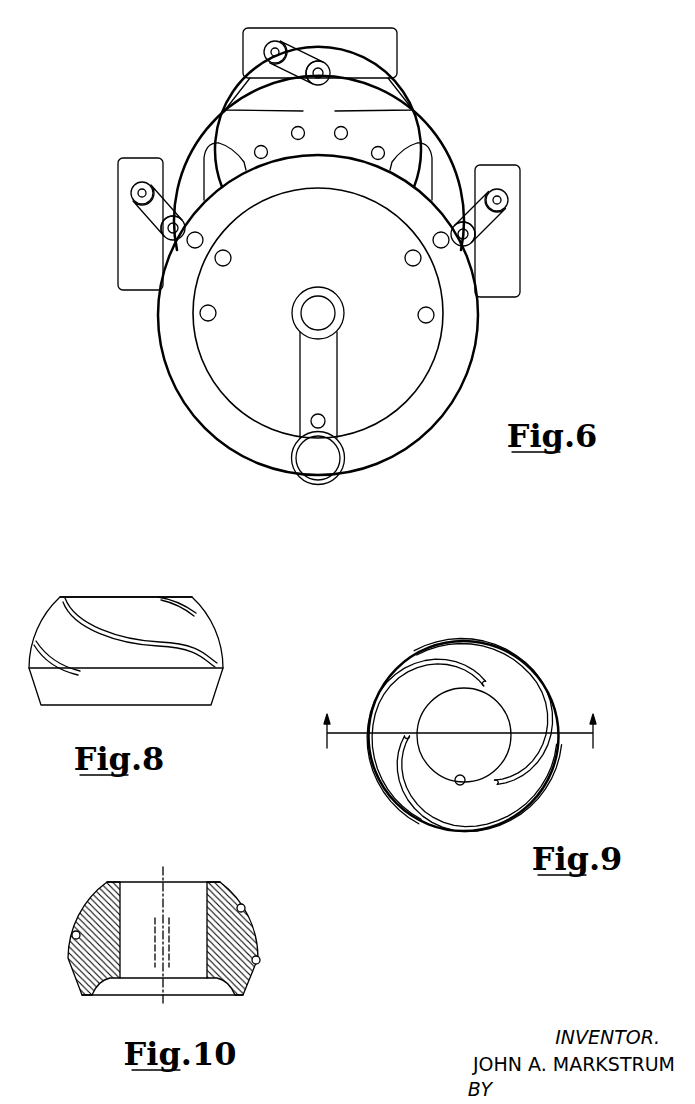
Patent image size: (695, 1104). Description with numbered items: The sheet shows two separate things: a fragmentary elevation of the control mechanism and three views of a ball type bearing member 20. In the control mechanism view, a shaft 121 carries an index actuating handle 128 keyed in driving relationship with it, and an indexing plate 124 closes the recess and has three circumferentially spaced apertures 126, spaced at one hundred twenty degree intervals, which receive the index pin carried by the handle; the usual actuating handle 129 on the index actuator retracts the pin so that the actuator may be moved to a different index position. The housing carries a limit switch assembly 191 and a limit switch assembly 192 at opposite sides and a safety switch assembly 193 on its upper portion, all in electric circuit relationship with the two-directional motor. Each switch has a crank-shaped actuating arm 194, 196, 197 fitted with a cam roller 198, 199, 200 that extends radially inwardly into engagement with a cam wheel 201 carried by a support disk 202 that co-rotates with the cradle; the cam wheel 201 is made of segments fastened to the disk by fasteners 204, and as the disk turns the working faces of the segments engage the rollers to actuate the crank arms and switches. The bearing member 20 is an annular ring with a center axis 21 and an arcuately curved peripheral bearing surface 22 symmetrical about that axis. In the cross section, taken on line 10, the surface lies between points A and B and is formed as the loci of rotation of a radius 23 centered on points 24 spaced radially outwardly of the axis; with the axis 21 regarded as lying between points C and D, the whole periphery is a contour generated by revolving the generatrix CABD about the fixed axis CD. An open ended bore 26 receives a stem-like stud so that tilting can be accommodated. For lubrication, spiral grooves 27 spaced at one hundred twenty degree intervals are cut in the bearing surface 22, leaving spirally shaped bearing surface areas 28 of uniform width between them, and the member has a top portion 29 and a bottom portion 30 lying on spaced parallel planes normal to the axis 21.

In FIG. 6, the shaft 121 is at (335, 310).
In FIG. 6, the indexing plate 124 is at (245, 397).
In FIG. 6, the apertures 126 is at (447, 252).
In FIG. 6, the index actuating handle 128 is at (338, 377).
In FIG. 6, the actuating handle 129 is at (318, 487).
In FIG. 6, the limit switch assembly 191 is at (507, 163).
In FIG. 6, the limit switch assembly 192 is at (140, 157).
In FIG. 6, the safety switch assembly 193 is at (258, 29).
In FIG. 6, the crank-shaped actuating arm 194 is at (487, 218).
In FIG. 6, the crank-shaped actuating arm 196 is at (292, 46).
In FIG. 6, the crank-shaped actuating arm 197 is at (152, 210).
In FIG. 6, the cam roller 198 is at (477, 243).
In FIG. 6, the cam roller 199 is at (330, 77).
In FIG. 6, the cam roller 200 is at (163, 233).
In FIG. 6, the cam wheel 201 is at (425, 163).
In FIG. 6, the support disk 202 is at (358, 138).
In FIG. 6, the fasteners 204 is at (341, 133).
In FIG. 8, the ball type bearing member 20 is at (210, 606).
In FIG. 9, the ball type bearing member 20 is at (556, 689).
In FIG. 10, the ball type bearing member 20 is at (210, 865).
In FIG. 10, the center axis 21 is at (162, 863).
In FIG. 10, the peripheral bearing surface 22 is at (242, 927).
In FIG. 10, the radius 23 is at (168, 953).
In FIG. 10, the points 24 is at (170, 953).
In FIG. 9, the open ended bore 26 is at (459, 785).
In FIG. 10, the open ended bore 26 is at (132, 982).
In FIG. 8, the spiral grooves 27 is at (183, 605).
In FIG. 9, the spiral grooves 27 is at (425, 813).
In FIG. 10, the spiral grooves 27 is at (73, 935).
In FIG. 8, the bearing surface areas 28 is at (207, 642).
In FIG. 9, the bearing surface areas 28 is at (523, 795).
In FIG. 8, the top portion 29 is at (70, 597).
In FIG. 10, the top portion 29 is at (112, 883).
In FIG. 10, the bottom portion 30 is at (94, 988).
In FIG. 9, the section line 10 is at (460, 744).
In FIG. 10, the point A is at (220, 882).
In FIG. 10, the point B is at (258, 960).
In FIG. 10, the point C is at (163, 882).
In FIG. 10, the point D is at (163, 997).